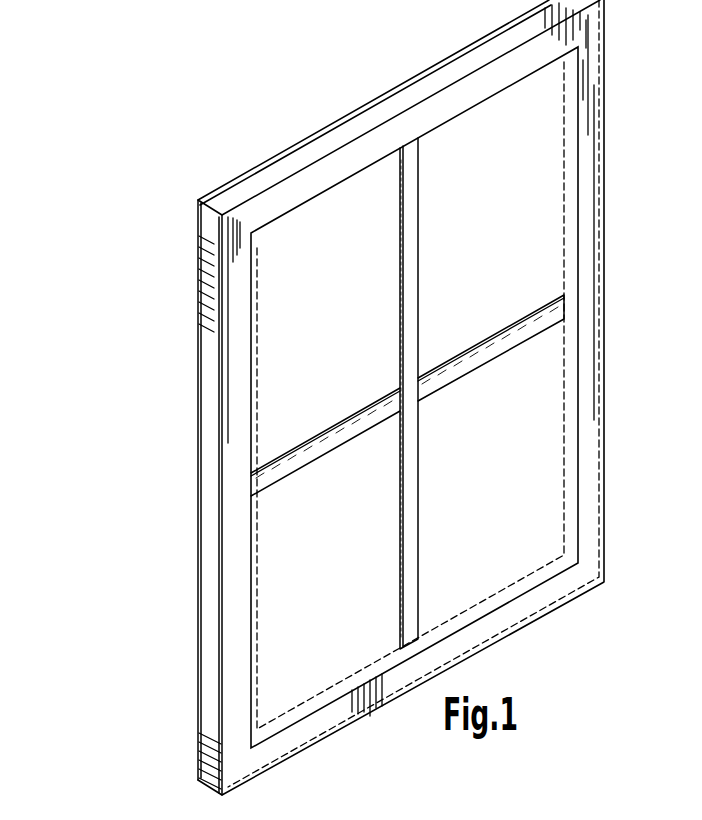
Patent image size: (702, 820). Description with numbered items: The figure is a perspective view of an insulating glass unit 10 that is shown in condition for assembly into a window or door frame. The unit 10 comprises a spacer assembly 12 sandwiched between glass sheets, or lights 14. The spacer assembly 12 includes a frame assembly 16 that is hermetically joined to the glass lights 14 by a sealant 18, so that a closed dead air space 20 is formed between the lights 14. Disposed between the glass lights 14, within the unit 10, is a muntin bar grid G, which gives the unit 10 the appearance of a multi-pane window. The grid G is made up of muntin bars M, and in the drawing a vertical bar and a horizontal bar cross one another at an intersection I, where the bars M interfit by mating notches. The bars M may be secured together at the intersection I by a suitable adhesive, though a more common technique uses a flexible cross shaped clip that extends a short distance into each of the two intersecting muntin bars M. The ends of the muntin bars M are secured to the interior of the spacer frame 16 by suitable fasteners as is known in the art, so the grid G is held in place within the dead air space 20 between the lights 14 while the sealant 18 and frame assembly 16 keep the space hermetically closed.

The insulating glass unit 10 is at (127, 630).
The spacer assembly 12 is at (206, 787).
The glass sheets, or lights 14 is at (283, 528).
The frame assembly 16 is at (287, 715).
The sealant 18 is at (208, 419).
The closed dead air space 20 is at (564, 455).
The muntin bars M is at (324, 448).
The intersection I is at (425, 355).
The muntin bar grid G is at (513, 323).